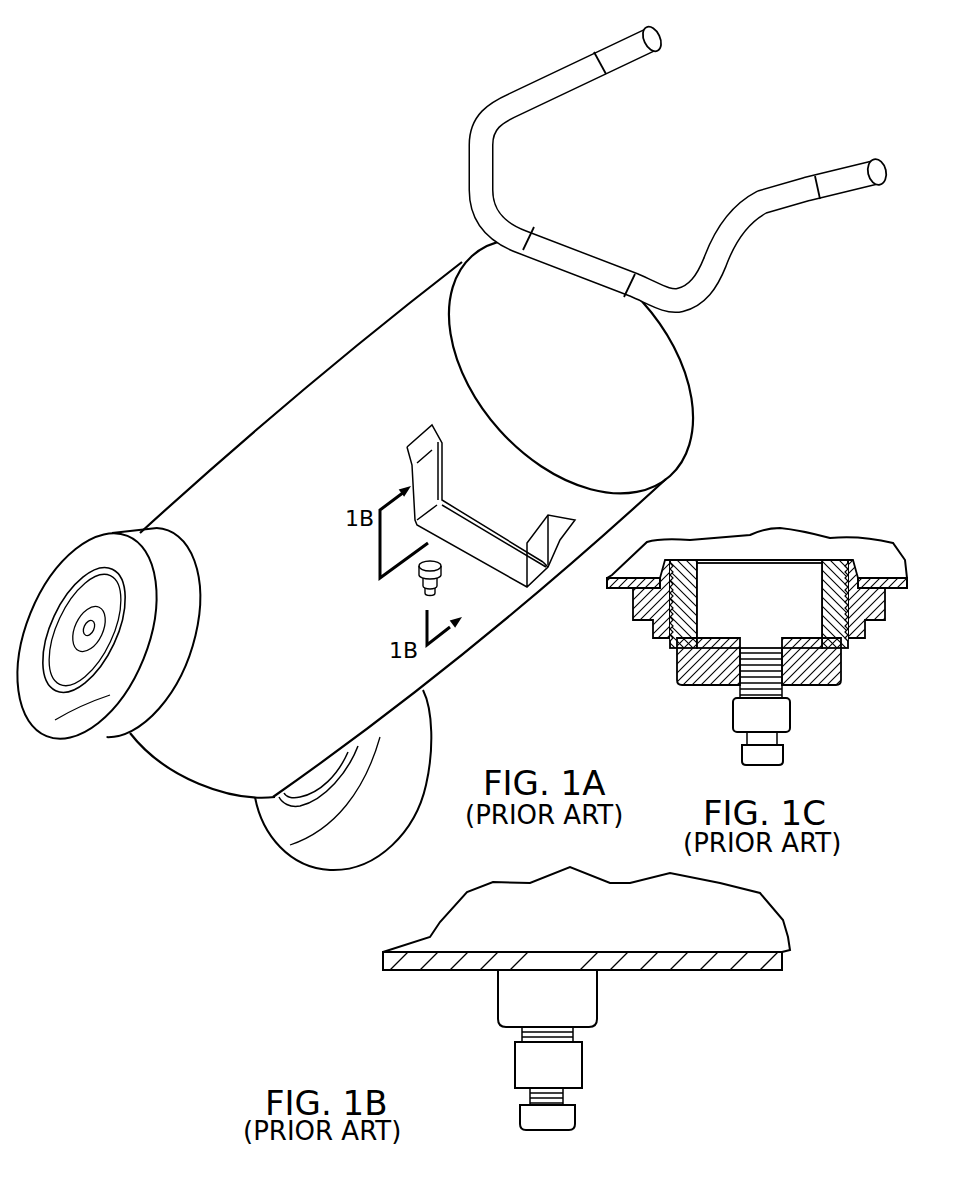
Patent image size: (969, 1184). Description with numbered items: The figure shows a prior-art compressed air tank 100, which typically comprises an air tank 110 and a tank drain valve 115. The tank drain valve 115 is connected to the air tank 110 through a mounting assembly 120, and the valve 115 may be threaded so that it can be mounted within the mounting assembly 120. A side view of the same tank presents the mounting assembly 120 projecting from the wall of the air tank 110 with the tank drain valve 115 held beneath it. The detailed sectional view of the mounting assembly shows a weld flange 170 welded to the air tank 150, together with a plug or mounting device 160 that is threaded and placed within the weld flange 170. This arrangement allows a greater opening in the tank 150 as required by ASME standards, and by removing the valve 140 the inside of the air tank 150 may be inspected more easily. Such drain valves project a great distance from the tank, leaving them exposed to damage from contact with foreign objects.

In FIG. 1A, the compressed air tank 100 is at (386, 160).
In FIG. 1A, the air tank 110 is at (293, 397).
In FIG. 1B, the air tank 110 is at (743, 972).
In FIG. 1A, the tank drain valve 115 is at (423, 573).
In FIG. 1B, the tank drain valve 115 is at (513, 1075).
In FIG. 1A, the mounting assembly 120 is at (440, 573).
In FIG. 1B, the mounting assembly 120 is at (597, 1000).
In FIG. 1C, the valve 140 is at (733, 703).
In FIG. 1C, the air tank 150 is at (900, 590).
In FIG. 1C, the plug 160 is at (853, 653).
In FIG. 1C, the weld flange 170 is at (633, 607).